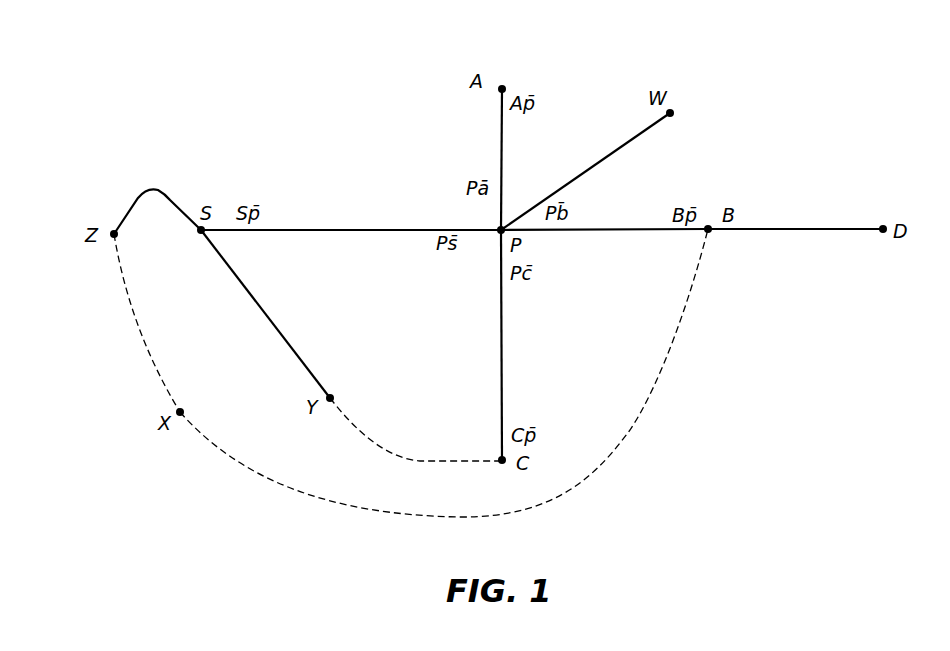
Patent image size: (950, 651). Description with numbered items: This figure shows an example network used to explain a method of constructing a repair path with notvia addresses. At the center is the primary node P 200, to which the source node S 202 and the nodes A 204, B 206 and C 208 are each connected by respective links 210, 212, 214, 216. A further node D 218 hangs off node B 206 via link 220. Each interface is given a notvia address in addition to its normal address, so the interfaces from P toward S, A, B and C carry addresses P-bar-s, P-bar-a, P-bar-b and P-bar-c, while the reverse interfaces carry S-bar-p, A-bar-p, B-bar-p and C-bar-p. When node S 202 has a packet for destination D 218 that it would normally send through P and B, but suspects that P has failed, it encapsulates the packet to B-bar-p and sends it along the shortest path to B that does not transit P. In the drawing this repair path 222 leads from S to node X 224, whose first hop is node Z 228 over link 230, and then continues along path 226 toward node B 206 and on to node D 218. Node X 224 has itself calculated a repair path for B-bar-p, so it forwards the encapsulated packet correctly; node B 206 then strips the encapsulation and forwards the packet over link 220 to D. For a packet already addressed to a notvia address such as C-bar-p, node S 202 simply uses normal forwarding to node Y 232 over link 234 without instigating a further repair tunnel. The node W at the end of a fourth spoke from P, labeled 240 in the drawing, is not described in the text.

The primary node P 200 is at (499, 233).
The source node S 202 is at (199, 234).
The node A 204 is at (504, 87).
The node B 206 is at (711, 232).
The node C 208 is at (499, 459).
The link 210 is at (365, 230).
The link 212 is at (500, 103).
The link 214 is at (610, 230).
The link 216 is at (503, 322).
The node D 218 is at (882, 233).
The link 220 is at (830, 229).
The path 222 is at (142, 332).
The node X 224 is at (183, 409).
The path 226 is at (660, 373).
The node Z 228 is at (112, 238).
The link 230 is at (147, 188).
The node Y 232 is at (332, 395).
The link 234 is at (283, 320).
The point W 240 is at (673, 112).